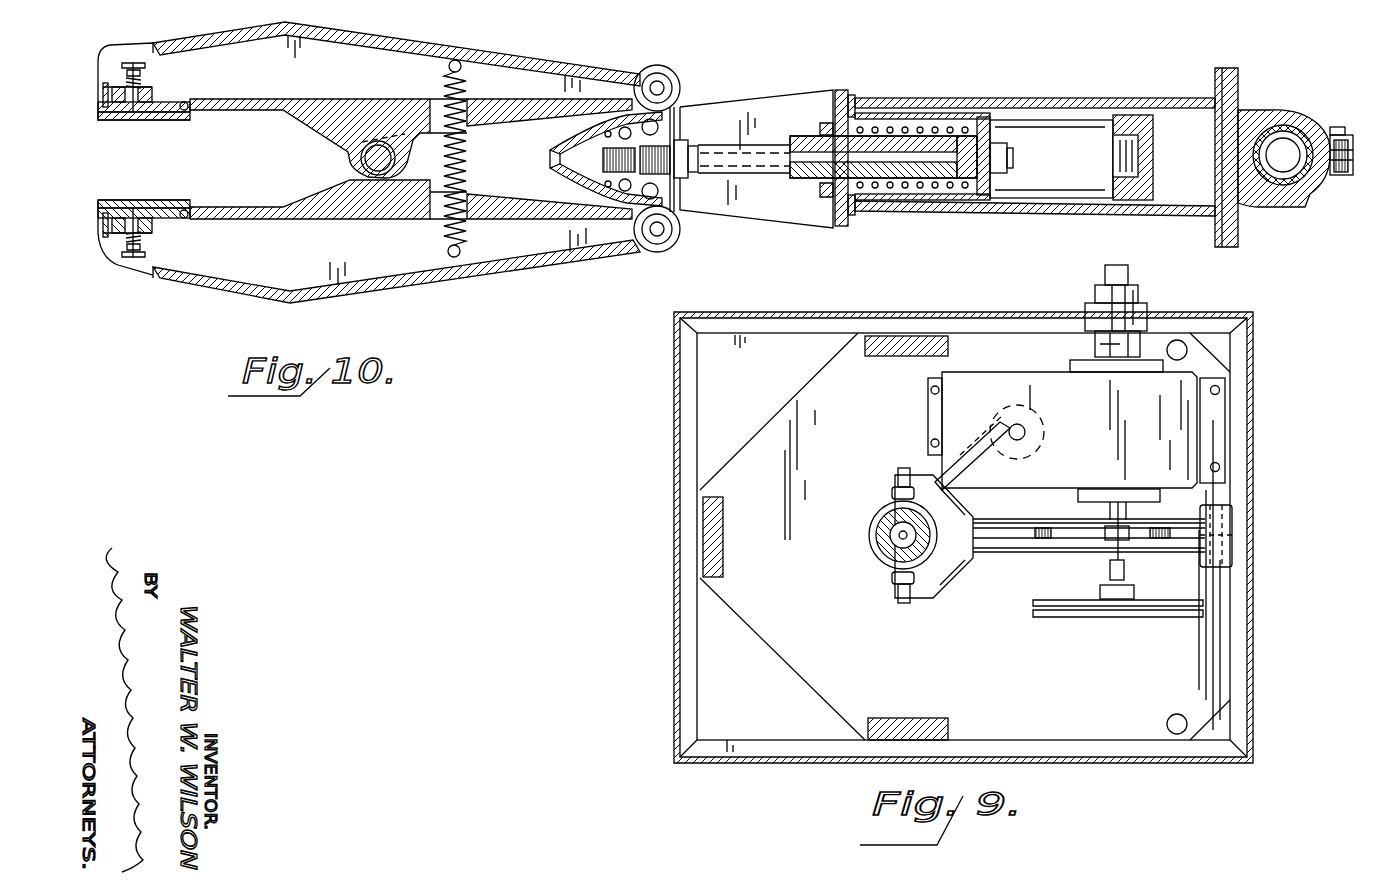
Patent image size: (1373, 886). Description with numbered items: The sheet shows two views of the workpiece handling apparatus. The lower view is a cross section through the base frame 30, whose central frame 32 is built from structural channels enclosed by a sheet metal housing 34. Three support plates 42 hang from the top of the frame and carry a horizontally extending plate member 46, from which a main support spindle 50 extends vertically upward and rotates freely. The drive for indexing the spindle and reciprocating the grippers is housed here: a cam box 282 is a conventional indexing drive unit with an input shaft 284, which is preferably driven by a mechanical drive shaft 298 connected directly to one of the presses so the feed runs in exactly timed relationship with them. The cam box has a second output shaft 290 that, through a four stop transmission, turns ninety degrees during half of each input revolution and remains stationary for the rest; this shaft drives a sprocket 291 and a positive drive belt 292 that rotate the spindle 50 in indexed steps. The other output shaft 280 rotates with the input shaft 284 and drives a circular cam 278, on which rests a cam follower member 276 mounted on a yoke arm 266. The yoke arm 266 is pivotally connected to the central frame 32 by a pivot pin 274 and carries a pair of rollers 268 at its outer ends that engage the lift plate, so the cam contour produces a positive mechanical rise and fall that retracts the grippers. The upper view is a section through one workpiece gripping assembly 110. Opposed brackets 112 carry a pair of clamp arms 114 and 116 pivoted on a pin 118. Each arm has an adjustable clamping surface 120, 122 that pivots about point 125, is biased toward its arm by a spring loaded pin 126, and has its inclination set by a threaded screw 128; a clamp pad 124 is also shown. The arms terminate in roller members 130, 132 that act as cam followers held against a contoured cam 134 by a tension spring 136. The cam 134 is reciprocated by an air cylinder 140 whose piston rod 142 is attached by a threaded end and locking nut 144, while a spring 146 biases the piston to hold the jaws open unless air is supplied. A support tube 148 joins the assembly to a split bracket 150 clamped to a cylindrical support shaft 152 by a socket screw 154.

In FIG. 9, the base frame 30 is at (664, 680).
In FIG. 9, the central frame 32 is at (735, 340).
In FIG. 9, the sheet metal housing 34 is at (940, 311).
In FIG. 9, the support plates 42 is at (896, 357).
In FIG. 9, the plate member 46 is at (795, 670).
In FIG. 9, the main support spindle 50 is at (882, 545).
In FIG. 10, the workpiece gripping assembly 110 is at (828, 46).
In FIG. 10, the brackets 112 is at (733, 223).
In FIG. 10, the clamp arm 114 is at (492, 275).
In FIG. 10, the clamp arm 116 is at (565, 62).
In FIG. 10, the pin 118 is at (362, 160).
In FIG. 10, the adjustable clamping surface 120 is at (170, 136).
In FIG. 10, the adjustable clamping surface 122 is at (181, 190).
In FIG. 10, the jaw pad 124 is at (172, 121).
In FIG. 10, the pivot point 125 is at (190, 104).
In FIG. 10, the spring loaded pin 126 is at (150, 97).
In FIG. 10, the threaded screw 128 is at (103, 108).
In FIG. 10, the roller member 130 is at (682, 82).
In FIG. 10, the roller member 132 is at (655, 253).
In FIG. 10, the contoured cam 134 is at (566, 170).
In FIG. 10, the tension spring 136 is at (466, 168).
In FIG. 10, the air cylinder 140 is at (952, 218).
In FIG. 10, the piston rod 142 is at (750, 182).
In FIG. 10, the locking nut 144 is at (670, 178).
In FIG. 10, the spring 146 is at (860, 218).
In FIG. 10, the support tube 148 is at (1057, 218).
In FIG. 10, the split bracket 150 is at (1247, 210).
In FIG. 10, the support shaft 152 is at (1303, 198).
In FIG. 10, the socket screw 154 is at (1352, 100).
In FIG. 9, the yoke arm 266 is at (950, 590).
In FIG. 9, the rollers 268 is at (890, 492).
In FIG. 9, the pivot pin 274 is at (1206, 576).
In FIG. 9, the cam follower member 276 is at (1105, 570).
In FIG. 9, the circular cam 278 is at (1045, 533).
In FIG. 9, the output shaft 280 is at (1078, 497).
In FIG. 9, the cam box 282 is at (1207, 433).
In FIG. 9, the input shaft 284 is at (1100, 349).
In FIG. 9, the second output shaft 290 is at (1026, 438).
In FIG. 9, the sprocket 291 is at (1030, 412).
In FIG. 9, the positive drive belt 292 is at (930, 462).
In FIG. 9, the mechanical drive shaft 298 is at (1128, 270).